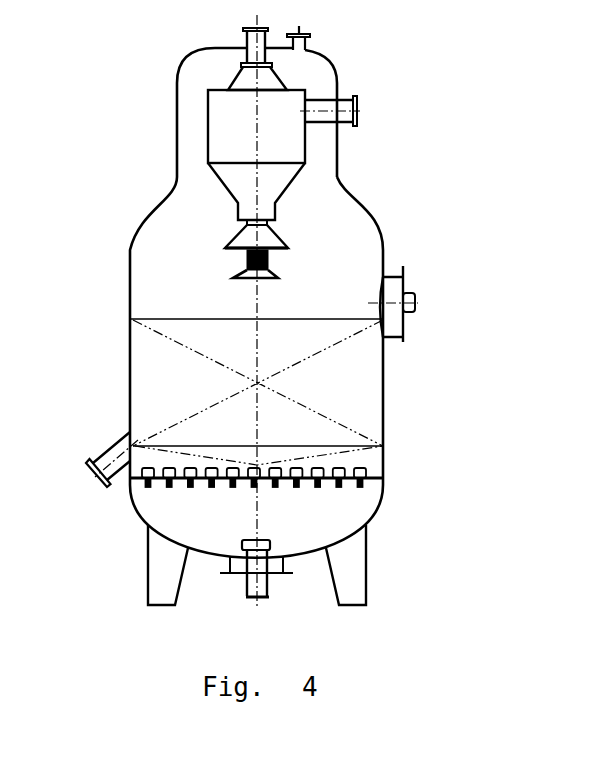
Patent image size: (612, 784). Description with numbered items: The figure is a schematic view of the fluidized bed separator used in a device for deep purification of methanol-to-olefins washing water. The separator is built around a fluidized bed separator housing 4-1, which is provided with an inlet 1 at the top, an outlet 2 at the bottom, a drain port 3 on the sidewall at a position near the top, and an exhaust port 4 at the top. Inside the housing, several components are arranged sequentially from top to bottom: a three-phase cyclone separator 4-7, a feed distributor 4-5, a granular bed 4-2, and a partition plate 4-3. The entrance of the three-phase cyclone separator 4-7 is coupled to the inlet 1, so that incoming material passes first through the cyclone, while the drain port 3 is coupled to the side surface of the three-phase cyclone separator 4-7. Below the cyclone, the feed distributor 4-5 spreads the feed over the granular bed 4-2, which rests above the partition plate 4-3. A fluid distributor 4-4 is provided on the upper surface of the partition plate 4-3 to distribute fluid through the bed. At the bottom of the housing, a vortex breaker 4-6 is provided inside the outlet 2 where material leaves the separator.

The inlet 1 is at (250, 42).
The outlet 2 is at (257, 585).
The drain port 3 is at (350, 104).
The exhaust port 4 is at (295, 43).
The fluidized bed separator housing 4-1 is at (130, 237).
The granular bed 4-2 is at (163, 363).
The partition plate 4-3 is at (133, 478).
The fluid distributor 4-4 is at (383, 478).
The feed distributor 4-5 is at (268, 270).
The vortex breaker 4-6 is at (267, 548).
The three-phase cyclone separator 4-7 is at (265, 142).